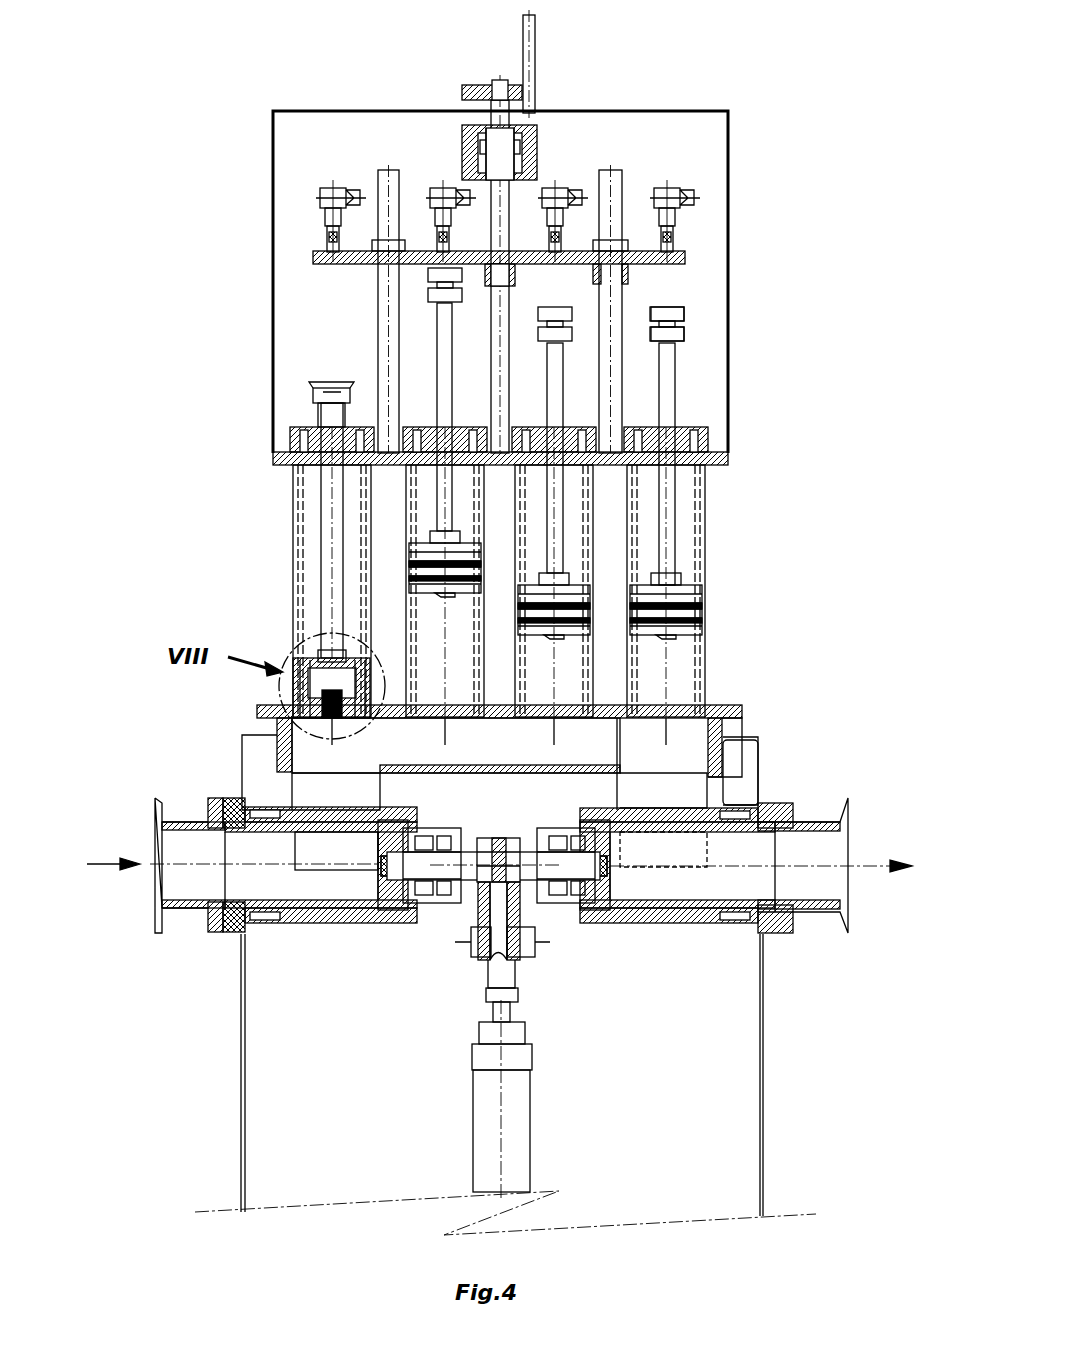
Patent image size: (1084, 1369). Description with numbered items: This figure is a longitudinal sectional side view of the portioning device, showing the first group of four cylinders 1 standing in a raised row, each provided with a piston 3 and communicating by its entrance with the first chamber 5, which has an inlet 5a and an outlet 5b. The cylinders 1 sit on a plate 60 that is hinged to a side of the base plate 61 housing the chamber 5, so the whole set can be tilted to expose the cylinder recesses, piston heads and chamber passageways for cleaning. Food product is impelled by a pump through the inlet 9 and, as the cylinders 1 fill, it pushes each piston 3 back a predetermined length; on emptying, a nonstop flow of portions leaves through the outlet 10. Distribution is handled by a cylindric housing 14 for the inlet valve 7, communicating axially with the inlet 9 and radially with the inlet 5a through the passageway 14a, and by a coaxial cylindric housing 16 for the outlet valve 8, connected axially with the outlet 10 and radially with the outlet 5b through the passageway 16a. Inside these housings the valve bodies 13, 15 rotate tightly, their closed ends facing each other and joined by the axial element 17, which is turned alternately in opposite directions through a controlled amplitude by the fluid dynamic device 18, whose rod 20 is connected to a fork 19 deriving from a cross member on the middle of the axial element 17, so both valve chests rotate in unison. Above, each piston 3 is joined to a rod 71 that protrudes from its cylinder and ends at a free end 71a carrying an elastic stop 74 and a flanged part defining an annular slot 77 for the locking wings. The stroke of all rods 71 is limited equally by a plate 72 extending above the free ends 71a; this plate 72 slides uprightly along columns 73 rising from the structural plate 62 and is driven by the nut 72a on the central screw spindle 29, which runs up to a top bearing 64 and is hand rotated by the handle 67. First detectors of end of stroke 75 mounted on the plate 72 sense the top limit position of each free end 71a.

The cylinder 1 is at (305, 583).
The piston 3 is at (310, 650).
The first chamber 5 is at (502, 755).
The inlet 5a is at (352, 765).
The outlet 5b is at (645, 772).
The inlet valve 7 is at (322, 933).
The outlet valve 8 is at (683, 942).
The inlet 9 is at (165, 850).
The outlet 10 is at (835, 850).
The cylindric body 13 is at (350, 935).
The cylindric housing 14 is at (305, 935).
The passageway 14a is at (290, 790).
The cylindric body 15 is at (690, 935).
The cylindric housing 16 is at (645, 935).
The passageway 16a is at (700, 795).
The axial element 17 is at (470, 855).
The fluid dynamic device 18 is at (530, 1143).
The fork 19 is at (522, 912).
The rod 20 is at (490, 1005).
The screw spindle 29 is at (505, 215).
The plate 60 is at (735, 700).
The base plate 61 is at (740, 730).
The structural plate 62 is at (725, 470).
The top bearing 64 is at (470, 150).
The handle 67 is at (540, 58).
The rod 71 is at (675, 410).
The free end 71a is at (684, 318).
The plate 72 is at (612, 243).
The nut 72a is at (520, 265).
The column 73 is at (383, 183).
The elastic stop 74 is at (677, 305).
The first detector of end of stroke 75 is at (677, 222).
The annular slot 77 is at (684, 330).